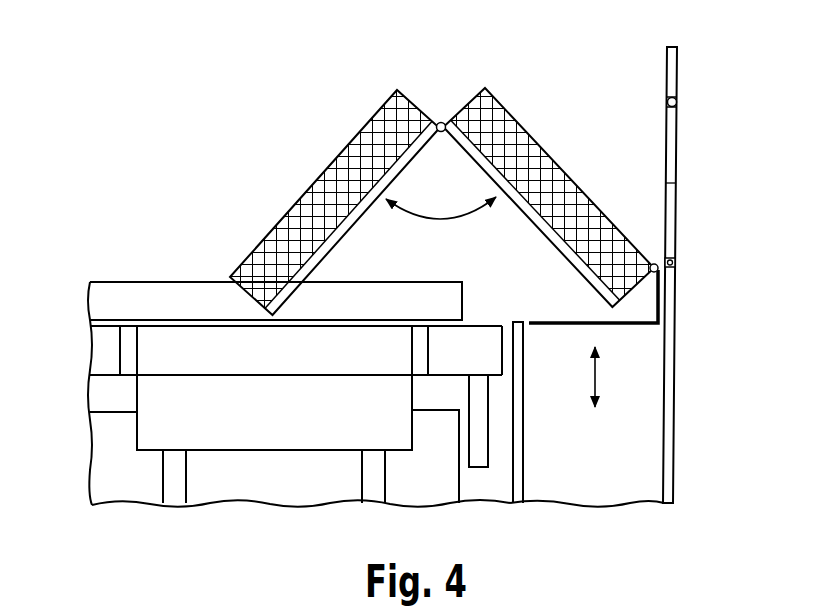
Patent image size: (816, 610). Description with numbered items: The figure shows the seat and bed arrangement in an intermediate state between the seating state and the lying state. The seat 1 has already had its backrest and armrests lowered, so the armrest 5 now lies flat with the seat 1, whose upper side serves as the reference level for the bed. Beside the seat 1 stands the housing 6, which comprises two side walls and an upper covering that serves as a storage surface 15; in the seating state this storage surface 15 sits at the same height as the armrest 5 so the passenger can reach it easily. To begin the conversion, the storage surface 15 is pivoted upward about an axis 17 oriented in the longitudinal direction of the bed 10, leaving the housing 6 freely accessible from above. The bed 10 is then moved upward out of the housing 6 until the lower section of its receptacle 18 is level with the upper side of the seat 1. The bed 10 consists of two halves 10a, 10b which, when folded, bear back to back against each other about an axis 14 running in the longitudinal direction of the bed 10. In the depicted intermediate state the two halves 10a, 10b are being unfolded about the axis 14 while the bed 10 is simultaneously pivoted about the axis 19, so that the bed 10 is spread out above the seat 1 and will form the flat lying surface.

The seat 1 is at (168, 313).
The armrest 5 is at (103, 348).
The housing 6 is at (645, 410).
The bed 10 is at (442, 191).
The first half of the bed 10a is at (353, 140).
The second half of the bed 10b is at (528, 147).
The axis 14 is at (443, 122).
The storage surface 15 is at (670, 183).
The axis 17 is at (676, 260).
The receptacle 18 is at (558, 322).
The axis 19 is at (651, 264).